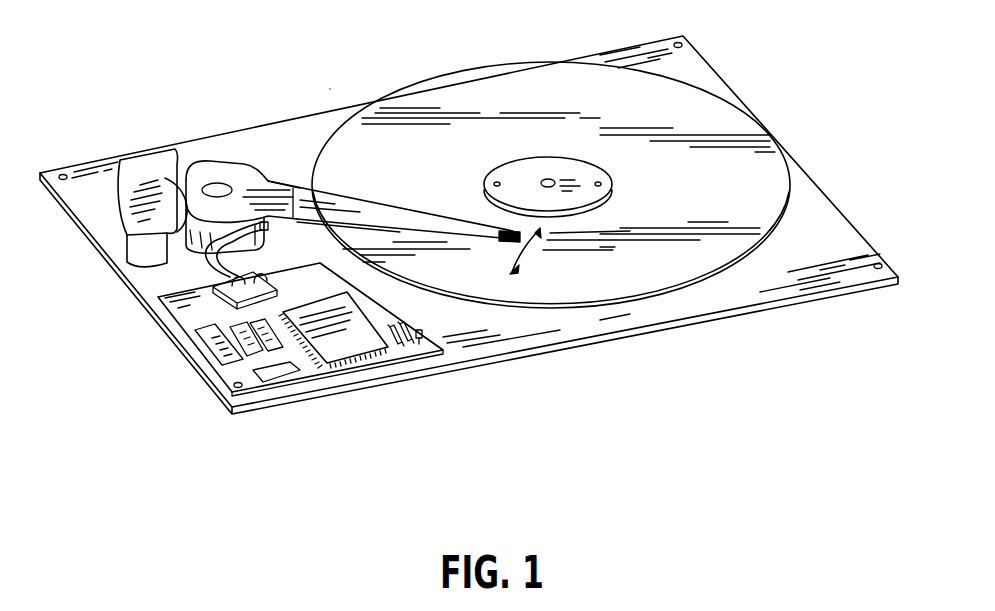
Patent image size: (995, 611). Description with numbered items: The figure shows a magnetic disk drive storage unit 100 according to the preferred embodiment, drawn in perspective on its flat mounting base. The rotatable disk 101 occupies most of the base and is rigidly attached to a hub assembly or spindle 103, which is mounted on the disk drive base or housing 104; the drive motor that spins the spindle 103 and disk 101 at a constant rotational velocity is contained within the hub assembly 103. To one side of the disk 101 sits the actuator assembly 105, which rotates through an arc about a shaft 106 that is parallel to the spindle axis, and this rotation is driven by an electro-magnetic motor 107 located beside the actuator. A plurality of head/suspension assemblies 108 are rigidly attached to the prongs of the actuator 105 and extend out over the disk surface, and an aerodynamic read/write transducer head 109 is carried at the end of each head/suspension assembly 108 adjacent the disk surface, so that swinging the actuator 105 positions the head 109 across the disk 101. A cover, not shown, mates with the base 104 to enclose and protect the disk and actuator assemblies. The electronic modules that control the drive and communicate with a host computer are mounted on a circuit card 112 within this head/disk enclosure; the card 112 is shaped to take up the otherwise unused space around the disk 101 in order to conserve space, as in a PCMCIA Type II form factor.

The magnetic disk drive storage unit 100 is at (329, 84).
The rotatable disk 101 is at (768, 172).
The hub assembly 103 is at (598, 160).
The disk drive base 104 is at (727, 82).
The actuator assembly 105 is at (264, 181).
The shaft 106 is at (217, 183).
The electro-magnetic motor 107 is at (137, 163).
The head/suspension assembly 108 is at (389, 207).
The read/write transducer head 109 is at (507, 241).
The circuit card 112 is at (313, 368).